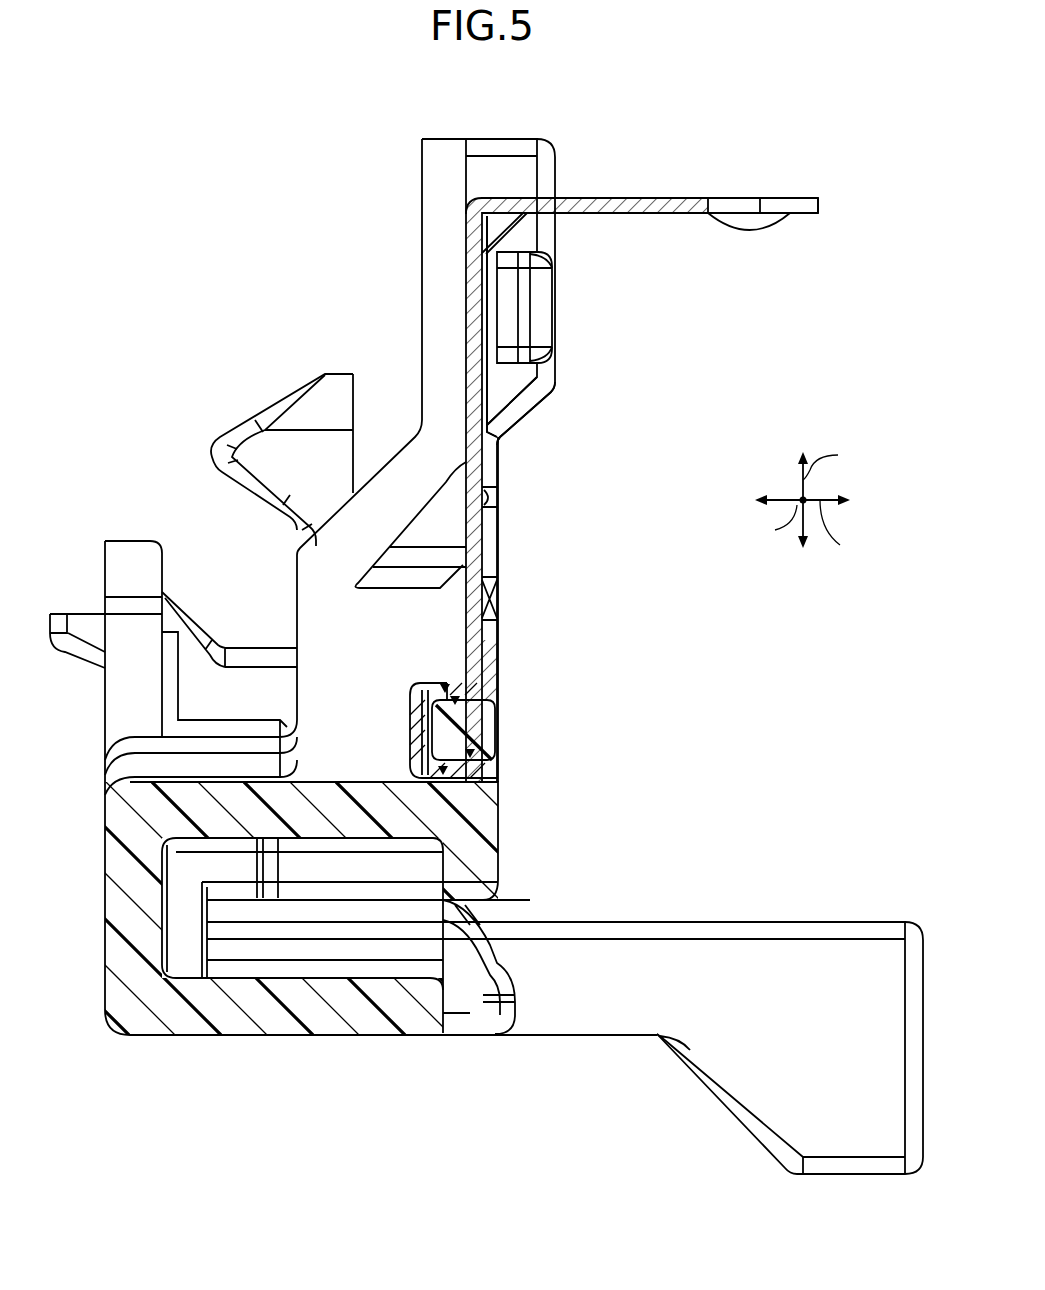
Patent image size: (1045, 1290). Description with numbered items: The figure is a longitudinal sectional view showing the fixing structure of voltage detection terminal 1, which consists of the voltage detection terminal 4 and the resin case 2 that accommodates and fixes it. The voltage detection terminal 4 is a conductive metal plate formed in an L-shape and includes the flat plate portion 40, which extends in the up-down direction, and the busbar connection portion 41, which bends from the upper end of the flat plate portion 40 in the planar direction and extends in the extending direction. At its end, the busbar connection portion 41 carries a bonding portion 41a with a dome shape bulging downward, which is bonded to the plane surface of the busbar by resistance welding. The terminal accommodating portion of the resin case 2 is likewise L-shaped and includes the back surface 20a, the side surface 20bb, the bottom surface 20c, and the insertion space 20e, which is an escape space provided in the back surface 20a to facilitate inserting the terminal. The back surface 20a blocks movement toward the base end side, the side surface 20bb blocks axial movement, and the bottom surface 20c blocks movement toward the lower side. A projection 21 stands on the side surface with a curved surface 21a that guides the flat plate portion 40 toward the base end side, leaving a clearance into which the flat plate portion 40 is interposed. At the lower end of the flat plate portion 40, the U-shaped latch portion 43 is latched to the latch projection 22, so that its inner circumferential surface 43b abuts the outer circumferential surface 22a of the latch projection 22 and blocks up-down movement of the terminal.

The fixing structure of voltage detection terminal 1 is at (342, 212).
The resin case 2 is at (512, 137).
The voltage detection terminal 4 is at (805, 184).
The back surface 20a is at (472, 178).
The side surface 20bb is at (517, 182).
The bottom surface 20c is at (318, 770).
The insertion space 20e is at (483, 612).
The projection 21 is at (523, 327).
The curved surface 21a is at (540, 285).
The latch projection 22 is at (502, 742).
The outer circumferential surface 22a is at (443, 780).
The flat plate portion 40 is at (487, 397).
The busbar connection portion 41 is at (660, 193).
The bonding portion 41a is at (753, 231).
The latch portion 43 is at (477, 690).
The inner circumferential surface 43b is at (456, 703).